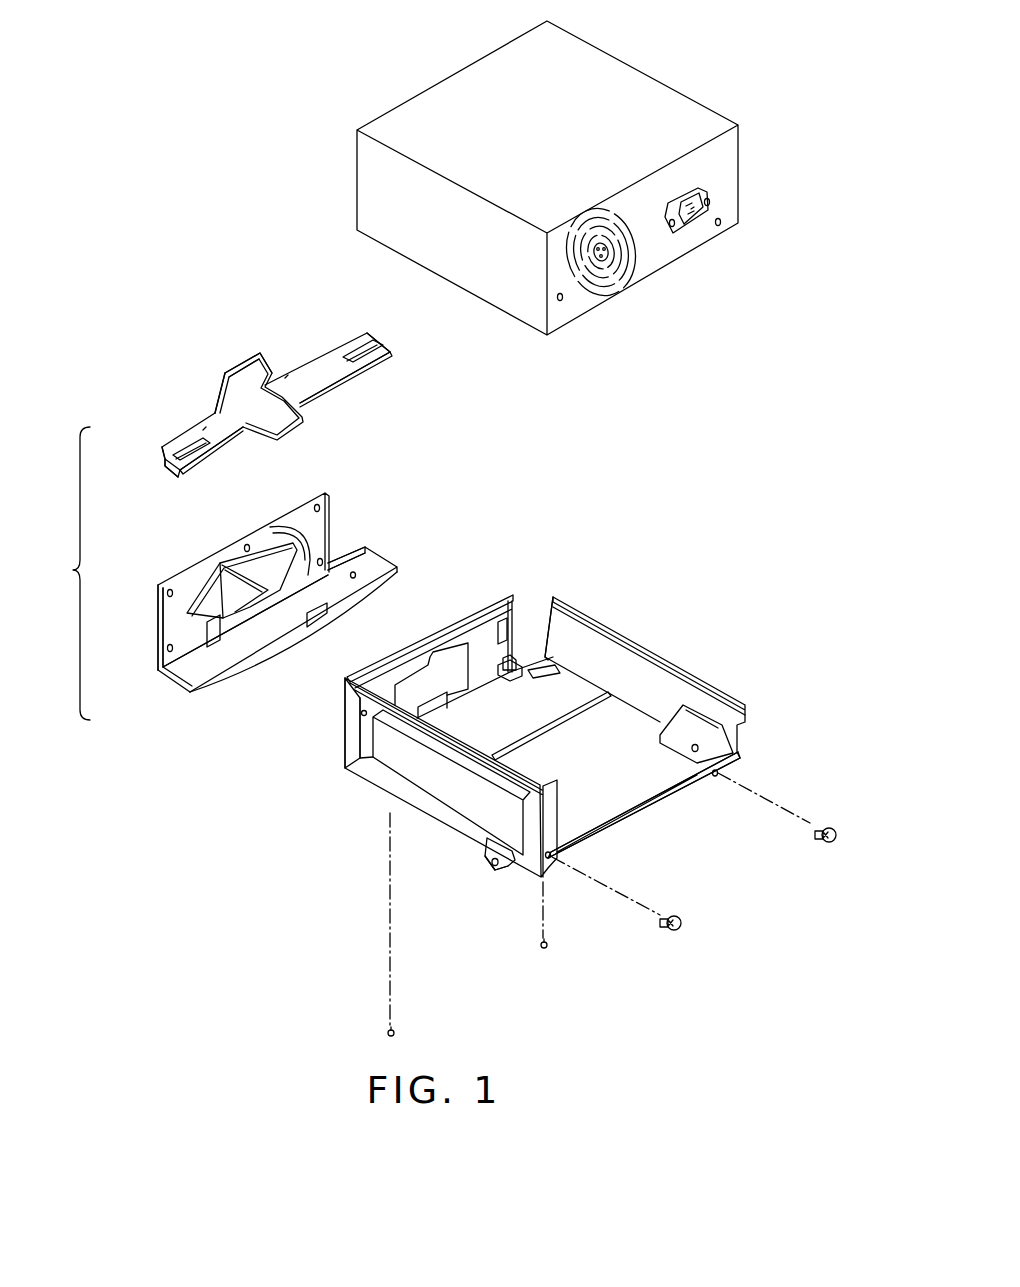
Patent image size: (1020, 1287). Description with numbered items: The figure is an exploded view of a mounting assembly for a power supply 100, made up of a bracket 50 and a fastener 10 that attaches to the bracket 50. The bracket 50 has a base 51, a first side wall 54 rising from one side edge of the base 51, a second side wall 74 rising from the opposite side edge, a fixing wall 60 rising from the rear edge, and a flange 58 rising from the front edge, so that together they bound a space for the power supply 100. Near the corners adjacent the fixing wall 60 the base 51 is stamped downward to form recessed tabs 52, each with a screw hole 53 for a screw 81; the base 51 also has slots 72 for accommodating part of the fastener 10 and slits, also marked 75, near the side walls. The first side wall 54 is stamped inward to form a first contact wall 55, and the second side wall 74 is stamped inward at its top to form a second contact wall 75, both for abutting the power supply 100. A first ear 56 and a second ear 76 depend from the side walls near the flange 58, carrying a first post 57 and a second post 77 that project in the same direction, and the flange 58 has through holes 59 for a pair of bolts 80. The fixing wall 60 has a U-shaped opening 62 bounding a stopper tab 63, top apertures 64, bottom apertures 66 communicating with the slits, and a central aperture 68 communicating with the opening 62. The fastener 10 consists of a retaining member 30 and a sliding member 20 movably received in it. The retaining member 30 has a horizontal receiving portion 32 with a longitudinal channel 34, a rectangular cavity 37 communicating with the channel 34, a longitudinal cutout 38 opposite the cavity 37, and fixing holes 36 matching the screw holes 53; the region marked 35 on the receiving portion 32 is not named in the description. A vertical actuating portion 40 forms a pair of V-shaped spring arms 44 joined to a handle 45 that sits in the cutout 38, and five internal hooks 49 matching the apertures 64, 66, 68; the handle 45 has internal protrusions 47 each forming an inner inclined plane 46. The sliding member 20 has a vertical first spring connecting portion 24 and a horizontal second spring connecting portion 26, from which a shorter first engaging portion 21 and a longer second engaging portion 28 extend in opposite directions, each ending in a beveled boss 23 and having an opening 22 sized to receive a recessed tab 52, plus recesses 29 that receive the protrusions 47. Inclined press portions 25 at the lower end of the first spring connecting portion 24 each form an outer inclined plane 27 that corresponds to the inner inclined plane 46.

The fastener 10 is at (66, 573).
The sliding member 20 is at (266, 395).
The first engaging portion 21 is at (232, 430).
The opening 22 is at (383, 348).
The beveled boss 23 is at (380, 335).
The first spring connecting portion 24 is at (253, 353).
The inclined press portion 25 is at (237, 373).
The second spring connecting portion 26 is at (302, 425).
The outer inclined plane 27 is at (217, 417).
The second engaging portion 28 is at (323, 373).
The recess 29 is at (285, 378).
The retaining member 30 is at (256, 602).
The receiving portion 32 is at (190, 692).
The longitudinal channel 34 is at (162, 670).
The rail 35 is at (323, 613).
The fixing hole 36 is at (355, 577).
The cavity 37 is at (280, 638).
The longitudinal cutout 38 is at (253, 625).
The actuating portion 40 is at (322, 493).
The spring arm 44 is at (313, 517).
The handle 45 is at (220, 563).
The inner inclined plane 46 is at (267, 590).
The internal protrusion 47 is at (290, 580).
The internal hook 49 is at (170, 597).
The bracket 50 is at (539, 752).
The base 51 is at (643, 803).
The recessed tab 52 is at (553, 655).
The screw hole 53 is at (540, 672).
The first side wall 54 is at (350, 770).
The first contact wall 55 is at (447, 783).
The first ear 56 is at (503, 872).
The first post 57 is at (490, 864).
The flange 58 is at (700, 777).
The through hole 59 is at (720, 777).
The fixing wall 60 is at (468, 632).
The U-shaped opening 62 is at (360, 714).
The stopper tab 63 is at (355, 753).
The top aperture 64 is at (503, 617).
The bottom aperture 66 is at (513, 658).
The central aperture 68 is at (432, 650).
The slot 72 is at (472, 693).
The second side wall 74 is at (610, 667).
The second contact wall 75 is at (515, 676).
The second ear 76 is at (733, 745).
The second post 77 is at (718, 755).
The bolt 80 is at (823, 825).
The screw 81 is at (396, 1036).
The power supply 100 is at (617, 93).